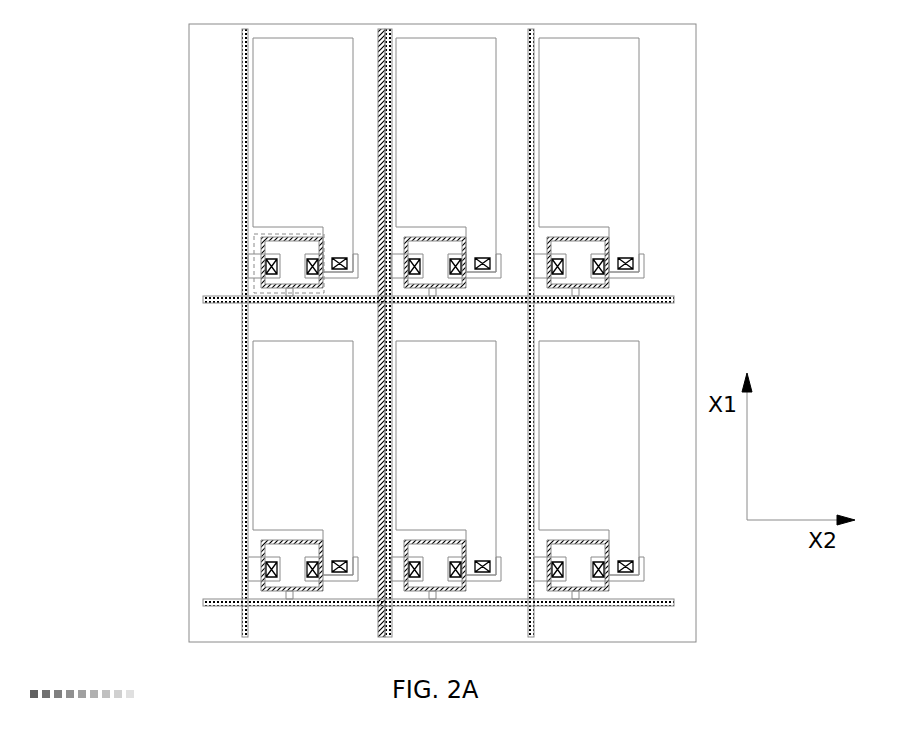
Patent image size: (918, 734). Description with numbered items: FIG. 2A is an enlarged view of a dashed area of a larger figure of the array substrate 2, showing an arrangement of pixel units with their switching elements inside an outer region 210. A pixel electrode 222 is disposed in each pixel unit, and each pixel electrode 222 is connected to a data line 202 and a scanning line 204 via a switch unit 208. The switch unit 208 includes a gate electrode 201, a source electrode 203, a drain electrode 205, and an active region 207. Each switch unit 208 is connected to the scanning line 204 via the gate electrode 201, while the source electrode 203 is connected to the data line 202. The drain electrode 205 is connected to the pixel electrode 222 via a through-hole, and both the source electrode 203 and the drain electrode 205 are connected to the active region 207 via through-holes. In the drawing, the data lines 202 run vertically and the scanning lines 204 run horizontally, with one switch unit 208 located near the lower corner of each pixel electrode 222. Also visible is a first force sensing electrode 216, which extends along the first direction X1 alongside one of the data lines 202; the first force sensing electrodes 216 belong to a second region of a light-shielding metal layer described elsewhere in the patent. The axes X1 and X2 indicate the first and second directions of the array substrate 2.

The array substrate 2 is at (66, 49).
The gate electrode 201 is at (287, 294).
The data line 202 is at (243, 155).
The source electrode 203 is at (253, 268).
The scanning line 204 is at (660, 293).
The drain electrode 205 is at (270, 283).
The active region 207 is at (235, 257).
The switch unit 208 is at (253, 255).
The display region 210 is at (696, 148).
The first force sensing electrode 216 is at (378, 123).
The pixel electrode 222 is at (619, 89).